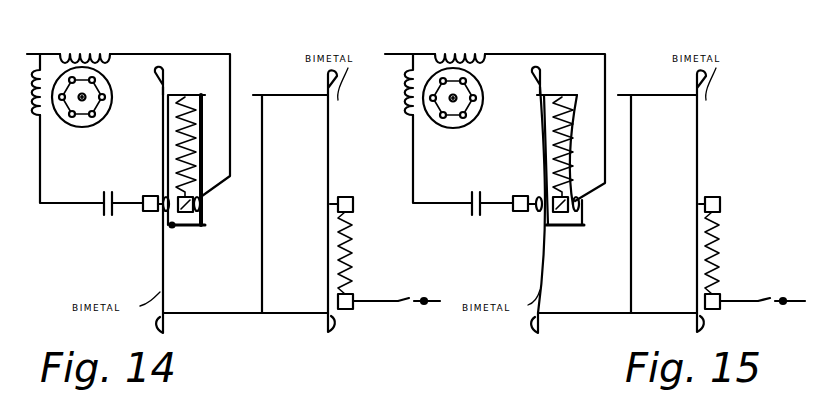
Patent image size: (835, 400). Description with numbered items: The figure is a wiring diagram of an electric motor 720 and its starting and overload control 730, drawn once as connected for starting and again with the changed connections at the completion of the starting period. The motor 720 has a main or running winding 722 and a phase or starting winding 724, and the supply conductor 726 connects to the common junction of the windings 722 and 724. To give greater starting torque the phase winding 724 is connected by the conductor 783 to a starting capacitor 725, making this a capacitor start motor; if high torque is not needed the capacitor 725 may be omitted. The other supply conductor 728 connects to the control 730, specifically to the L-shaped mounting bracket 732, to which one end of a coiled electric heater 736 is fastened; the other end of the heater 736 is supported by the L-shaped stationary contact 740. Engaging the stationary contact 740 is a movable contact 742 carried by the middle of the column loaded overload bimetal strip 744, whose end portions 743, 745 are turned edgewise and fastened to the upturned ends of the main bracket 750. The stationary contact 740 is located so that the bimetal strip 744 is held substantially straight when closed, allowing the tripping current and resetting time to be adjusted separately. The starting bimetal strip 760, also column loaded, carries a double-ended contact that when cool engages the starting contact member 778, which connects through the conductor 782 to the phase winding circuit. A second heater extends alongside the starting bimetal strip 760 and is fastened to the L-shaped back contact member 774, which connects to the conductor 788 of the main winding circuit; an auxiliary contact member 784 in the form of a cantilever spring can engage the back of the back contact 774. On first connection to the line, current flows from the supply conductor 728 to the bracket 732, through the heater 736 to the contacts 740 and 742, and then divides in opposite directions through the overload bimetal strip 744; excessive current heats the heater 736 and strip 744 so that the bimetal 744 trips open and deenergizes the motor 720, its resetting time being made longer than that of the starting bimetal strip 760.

In FIG. 14, the electric motor 720 is at (112, 104).
In FIG. 15, the electric motor 720 is at (483, 106).
In FIG. 14, the main or running winding 722 is at (80, 52).
In FIG. 15, the main or running winding 722 is at (457, 52).
In FIG. 14, the phase or starting winding 724 is at (46, 122).
In FIG. 15, the phase or starting winding 724 is at (410, 82).
In FIG. 14, the starting capacitor 725 is at (107, 214).
In FIG. 15, the starting capacitor 725 is at (492, 212).
In FIG. 14, the supply conductor 726 is at (33, 54).
In FIG. 15, the supply conductor 726 is at (407, 54).
In FIG. 14, the supply conductor 728 is at (392, 301).
In FIG. 15, the supply conductor 728 is at (755, 302).
In FIG. 14, the starting and overload control 730 is at (260, 342).
In FIG. 15, the starting and overload control 730 is at (640, 342).
In FIG. 14, the L-shaped mounting bracket 732 is at (352, 312).
In FIG. 15, the L-shaped mounting bracket 732 is at (709, 312).
In FIG. 14, the coiled electric heater 736 is at (352, 253).
In FIG. 15, the coiled electric heater 736 is at (720, 253).
In FIG. 14, the stationary contact 740 is at (353, 206).
In FIG. 15, the stationary contact 740 is at (721, 206).
In FIG. 14, the movable contact 742 is at (333, 200).
In FIG. 15, the movable contact 742 is at (700, 200).
In FIG. 14, the upper end of bimetal 743 is at (326, 82).
In FIG. 15, the upper end of bimetal 743 is at (694, 82).
In FIG. 14, the overload bimetal strip 744 is at (331, 140).
In FIG. 15, the overload bimetal strip 744 is at (699, 142).
In FIG. 14, the lower end of bimetal 745 is at (332, 330).
In FIG. 15, the lower end of bimetal 745 is at (695, 330).
In FIG. 14, the main bracket 750 is at (263, 193).
In FIG. 15, the main bracket 750 is at (632, 190).
In FIG. 14, the starting bimetal strip 760 is at (163, 272).
In FIG. 15, the starting bimetal strip 760 is at (545, 272).
In FIG. 14, the back contact member 774 is at (184, 222).
In FIG. 15, the back contact member 774 is at (564, 216).
In FIG. 14, the starting contact member 778 is at (157, 212).
In FIG. 15, the starting contact member 778 is at (521, 215).
In FIG. 14, the conductor 782 is at (130, 196).
In FIG. 15, the conductor 782 is at (501, 200).
In FIG. 14, the conductor 783 is at (44, 186).
In FIG. 15, the conductor 783 is at (414, 172).
In FIG. 14, the auxiliary contact member 784 is at (205, 106).
In FIG. 15, the auxiliary contact member 784 is at (593, 88).
In FIG. 14, the conductor 788 is at (236, 64).